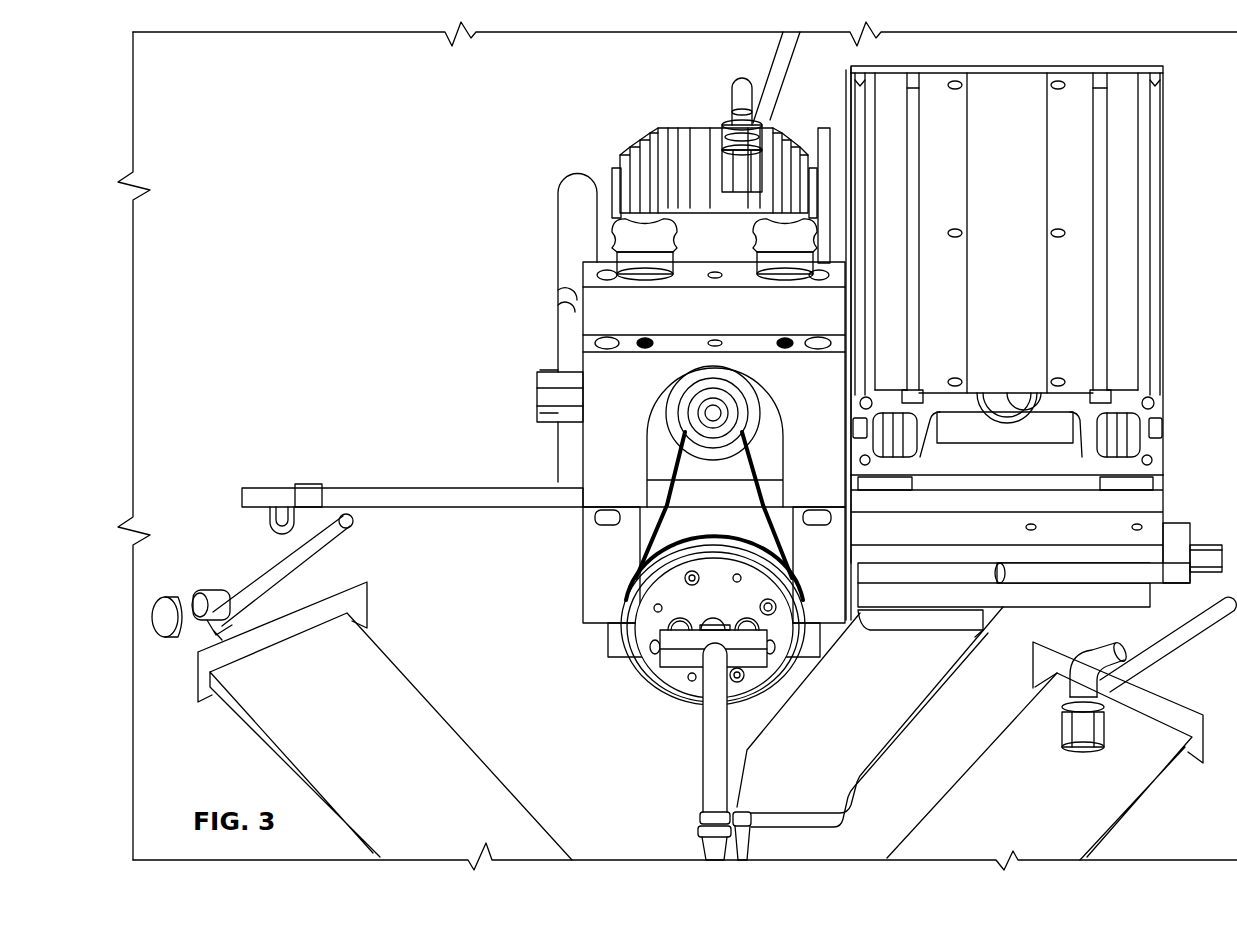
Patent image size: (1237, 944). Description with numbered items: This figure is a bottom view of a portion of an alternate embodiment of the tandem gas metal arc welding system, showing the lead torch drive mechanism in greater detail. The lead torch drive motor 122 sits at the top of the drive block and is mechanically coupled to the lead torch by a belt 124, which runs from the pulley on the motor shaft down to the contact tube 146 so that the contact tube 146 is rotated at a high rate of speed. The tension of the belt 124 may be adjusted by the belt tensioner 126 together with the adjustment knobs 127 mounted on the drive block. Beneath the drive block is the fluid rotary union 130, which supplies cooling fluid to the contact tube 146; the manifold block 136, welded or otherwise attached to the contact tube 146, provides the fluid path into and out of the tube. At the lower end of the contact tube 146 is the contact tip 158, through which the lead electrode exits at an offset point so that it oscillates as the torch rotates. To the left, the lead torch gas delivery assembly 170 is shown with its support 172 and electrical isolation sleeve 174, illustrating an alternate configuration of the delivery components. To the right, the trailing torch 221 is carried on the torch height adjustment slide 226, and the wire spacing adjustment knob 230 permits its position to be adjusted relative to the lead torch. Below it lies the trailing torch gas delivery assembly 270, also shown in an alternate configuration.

The lead torch drive motor 122 is at (708, 215).
The adjustment knobs 127 is at (650, 245).
The belt tensioner 126 is at (583, 455).
The belt 124 is at (640, 532).
The fluid rotary union 130 is at (653, 640).
The manifold block 136 is at (653, 673).
The contact tube 146 is at (702, 747).
The contact tip 158 is at (690, 835).
The support 172 is at (415, 487).
The electrical isolation sleeve 174 is at (263, 617).
The lead torch gas delivery assembly 170 is at (385, 721).
The trailing torch 221 is at (860, 708).
The torch height adjustment slide 226 is at (1007, 336).
The wire spacing adjustment knob 230 is at (1222, 553).
The trailing torch gas delivery assembly 270 is at (1061, 728).